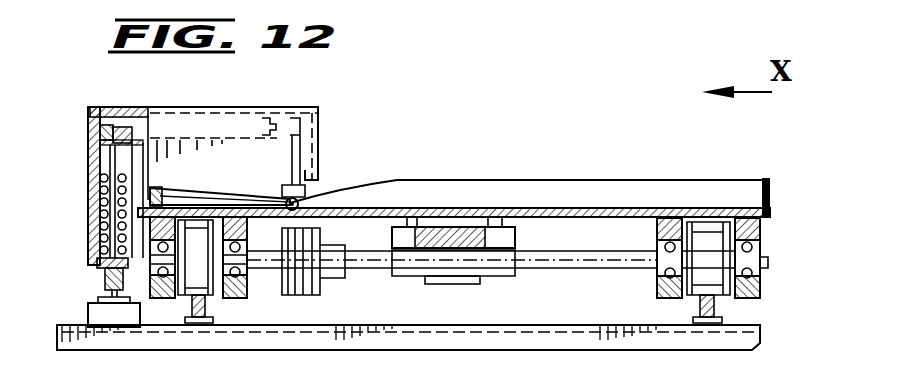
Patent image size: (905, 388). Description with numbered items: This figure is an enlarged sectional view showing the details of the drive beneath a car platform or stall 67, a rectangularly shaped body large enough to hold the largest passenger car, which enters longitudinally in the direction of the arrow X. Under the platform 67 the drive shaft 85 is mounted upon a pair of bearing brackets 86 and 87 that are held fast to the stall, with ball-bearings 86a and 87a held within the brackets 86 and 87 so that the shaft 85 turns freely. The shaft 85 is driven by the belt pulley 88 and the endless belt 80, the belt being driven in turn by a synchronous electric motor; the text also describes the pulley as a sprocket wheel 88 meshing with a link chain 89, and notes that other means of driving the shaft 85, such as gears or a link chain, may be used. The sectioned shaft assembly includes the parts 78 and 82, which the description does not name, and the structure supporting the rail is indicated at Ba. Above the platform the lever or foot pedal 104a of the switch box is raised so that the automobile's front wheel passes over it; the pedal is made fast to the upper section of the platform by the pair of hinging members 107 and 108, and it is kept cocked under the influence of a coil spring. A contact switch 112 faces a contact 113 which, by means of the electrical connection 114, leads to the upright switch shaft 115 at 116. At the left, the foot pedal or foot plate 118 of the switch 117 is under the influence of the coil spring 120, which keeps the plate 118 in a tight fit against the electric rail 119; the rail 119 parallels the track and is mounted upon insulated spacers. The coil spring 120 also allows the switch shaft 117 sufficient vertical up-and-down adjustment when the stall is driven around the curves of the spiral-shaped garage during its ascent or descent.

The car platform or stall 67 is at (572, 195).
The block 78 is at (490, 240).
The endless belt 80 is at (418, 280).
The key 82 is at (477, 285).
The drive shaft 85 is at (560, 278).
The bearing bracket 86 is at (733, 300).
The ball-bearings 86a is at (737, 213).
The bearing bracket 87 is at (162, 298).
The ball-bearings 87a is at (245, 298).
The belt pulley 88 is at (302, 232).
The link chain 89 is at (312, 295).
The foot pedal lever 104a is at (243, 190).
The hinging member 107 is at (157, 198).
The hinging member 108 is at (368, 204).
The contact switch 112 is at (320, 132).
The contact 113 is at (280, 112).
The electrical connection 114 is at (228, 167).
The upright switch shaft 115 is at (100, 148).
The connection point on switch shaft 116 is at (90, 118).
The switch shaft 117 is at (97, 252).
The foot pedal or foot plate 118 is at (97, 263).
The electric rail 119 is at (100, 293).
The coil spring 120 is at (100, 200).
The base rail Ba is at (604, 328).